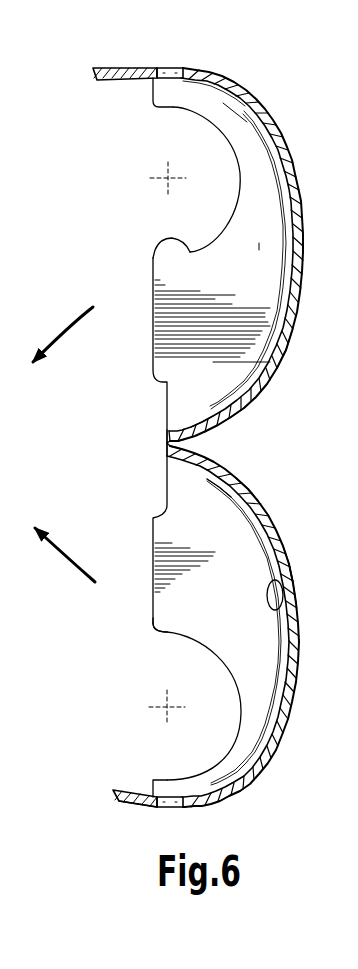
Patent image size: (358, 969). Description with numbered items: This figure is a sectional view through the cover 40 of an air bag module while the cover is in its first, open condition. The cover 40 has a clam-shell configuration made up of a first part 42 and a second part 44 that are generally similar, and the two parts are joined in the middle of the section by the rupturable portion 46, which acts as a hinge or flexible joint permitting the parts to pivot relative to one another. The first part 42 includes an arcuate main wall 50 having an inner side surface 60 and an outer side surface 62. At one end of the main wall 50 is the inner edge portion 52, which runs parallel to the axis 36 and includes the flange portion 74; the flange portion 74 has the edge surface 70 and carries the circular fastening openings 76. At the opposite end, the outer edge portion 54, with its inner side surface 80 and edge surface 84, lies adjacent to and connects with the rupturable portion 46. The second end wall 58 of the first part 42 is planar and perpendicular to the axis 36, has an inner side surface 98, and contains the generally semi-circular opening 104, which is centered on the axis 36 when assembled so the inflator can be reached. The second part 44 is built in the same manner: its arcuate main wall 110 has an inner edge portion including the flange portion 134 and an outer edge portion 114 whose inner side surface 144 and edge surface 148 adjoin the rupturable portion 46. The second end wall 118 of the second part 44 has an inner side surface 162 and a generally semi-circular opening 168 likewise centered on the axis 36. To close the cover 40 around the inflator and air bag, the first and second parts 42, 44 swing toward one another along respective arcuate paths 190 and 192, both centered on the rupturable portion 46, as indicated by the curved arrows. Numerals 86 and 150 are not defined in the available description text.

The axis 36 is at (161, 184).
The cover 40 is at (305, 446).
The first part 42 is at (303, 535).
The second part 44 is at (306, 334).
The rupturable portion 46 is at (144, 444).
The main wall 50 is at (295, 558).
The inner edge portion 52 is at (226, 797).
The outer edge portion 54 is at (248, 459).
The second end wall 58 is at (149, 637).
The inner side surface 60 is at (283, 603).
The outer side surface 62 is at (300, 619).
The edge surface 70 is at (111, 791).
The flange portion 74 is at (128, 807).
The fastening openings 76 is at (167, 807).
The inner side surface 80 is at (201, 470).
The edge surface 84 is at (157, 452).
The hinge knuckle 86 is at (185, 470).
The inner side surface 98 is at (155, 598).
The opening 104 is at (212, 666).
The main wall 110 is at (293, 170).
The outer edge portion 114 is at (251, 410).
The second end wall 118 is at (243, 275).
The flange portion 134 is at (108, 91).
The inner side surface 144 is at (216, 420).
The edge surface 148 is at (163, 438).
The web 150 is at (184, 411).
The inner side surface 162 is at (160, 243).
The opening 168 is at (216, 128).
The arcuate path 190 is at (52, 553).
The arcuate path 192 is at (54, 341).